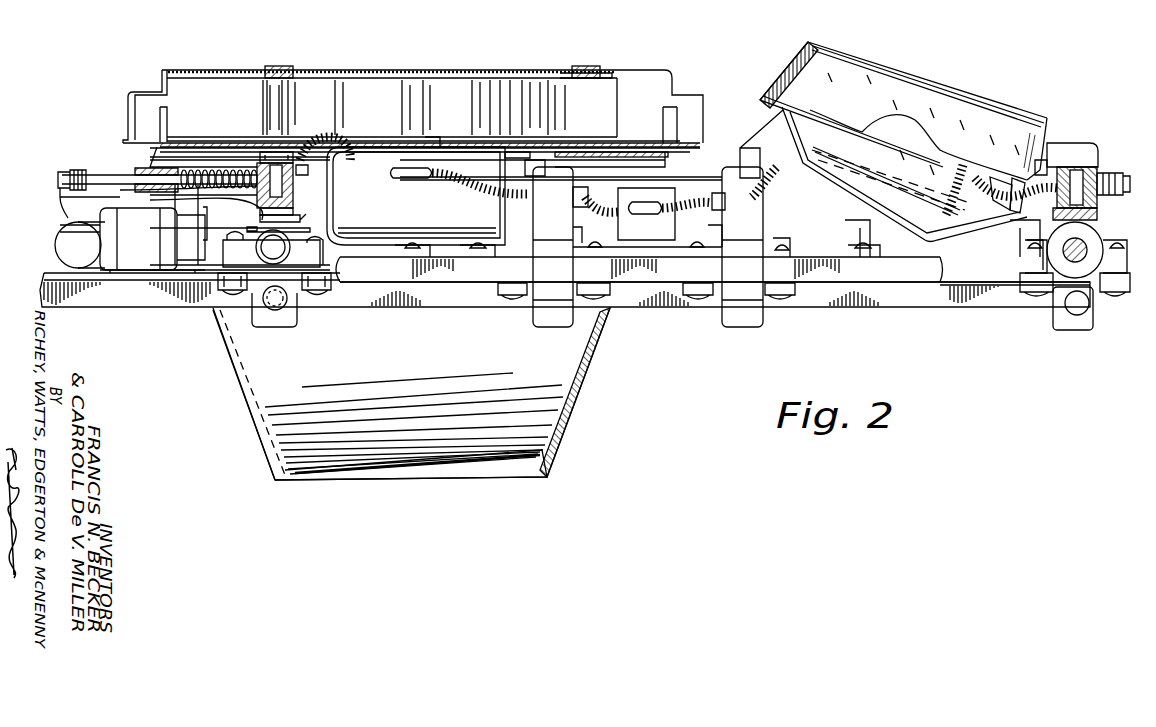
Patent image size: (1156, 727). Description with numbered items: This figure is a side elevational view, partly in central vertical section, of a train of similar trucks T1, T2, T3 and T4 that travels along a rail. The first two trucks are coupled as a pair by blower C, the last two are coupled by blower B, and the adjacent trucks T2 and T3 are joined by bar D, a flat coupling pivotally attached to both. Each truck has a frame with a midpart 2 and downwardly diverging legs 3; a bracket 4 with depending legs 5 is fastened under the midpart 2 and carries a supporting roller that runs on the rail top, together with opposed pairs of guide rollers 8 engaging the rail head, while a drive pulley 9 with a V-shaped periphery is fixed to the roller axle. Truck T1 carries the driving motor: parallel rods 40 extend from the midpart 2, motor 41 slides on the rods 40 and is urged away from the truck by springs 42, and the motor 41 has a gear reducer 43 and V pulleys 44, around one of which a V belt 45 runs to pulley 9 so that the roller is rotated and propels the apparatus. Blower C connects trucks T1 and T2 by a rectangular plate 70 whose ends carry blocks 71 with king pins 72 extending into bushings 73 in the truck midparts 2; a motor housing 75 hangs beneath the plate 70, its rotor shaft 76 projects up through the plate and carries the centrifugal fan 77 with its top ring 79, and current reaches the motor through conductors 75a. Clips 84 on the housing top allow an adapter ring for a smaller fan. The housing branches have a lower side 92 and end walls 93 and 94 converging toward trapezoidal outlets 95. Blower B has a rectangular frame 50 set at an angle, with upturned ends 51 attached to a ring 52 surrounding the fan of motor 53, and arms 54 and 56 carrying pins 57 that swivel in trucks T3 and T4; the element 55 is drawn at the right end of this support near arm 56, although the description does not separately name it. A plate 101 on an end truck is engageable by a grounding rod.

The midpart 2 is at (300, 205).
The downwardly diverging legs 3 is at (565, 218).
The bracket 4 is at (300, 216).
The depending legs 5 is at (315, 240).
The guide rollers 8 is at (228, 292).
The drive pulley 9 is at (292, 248).
The parallel rods 40 is at (108, 174).
The motor 41 is at (168, 259).
The springs 42 is at (213, 170).
The gear reducer 43 is at (70, 217).
The V pulleys 44 is at (68, 247).
The V belt 45 is at (116, 270).
The rectangular frame 50 is at (885, 215).
The upturned ends 51 is at (792, 64).
The ring 52 is at (1015, 205).
The motor 53 is at (850, 190).
The arm 54 is at (752, 145).
The block 55 is at (1055, 143).
The arm 56 is at (1070, 157).
The pins 57 is at (1098, 172).
The rectangular plate 70 is at (508, 152).
The block 71 is at (240, 145).
The king pin 72 is at (278, 168).
The bushings 73 is at (340, 150).
The motor housing 75 is at (440, 216).
The conductors 75a is at (474, 185).
The rotor shaft 76 is at (435, 140).
The fan 77 is at (500, 95).
The top ring 79 is at (279, 66).
The clips 84 is at (590, 66).
The lower side 92 is at (445, 335).
The end wall 93 is at (270, 447).
The end wall 94 is at (560, 435).
The outlets 95 is at (465, 468).
The plate 101 is at (60, 180).
The blower B is at (838, 56).
The blower C is at (615, 70).
The bar D is at (686, 177).
The truck T1 is at (260, 323).
The truck T2 is at (553, 328).
The truck T3 is at (748, 328).
The truck T4 is at (1068, 325).